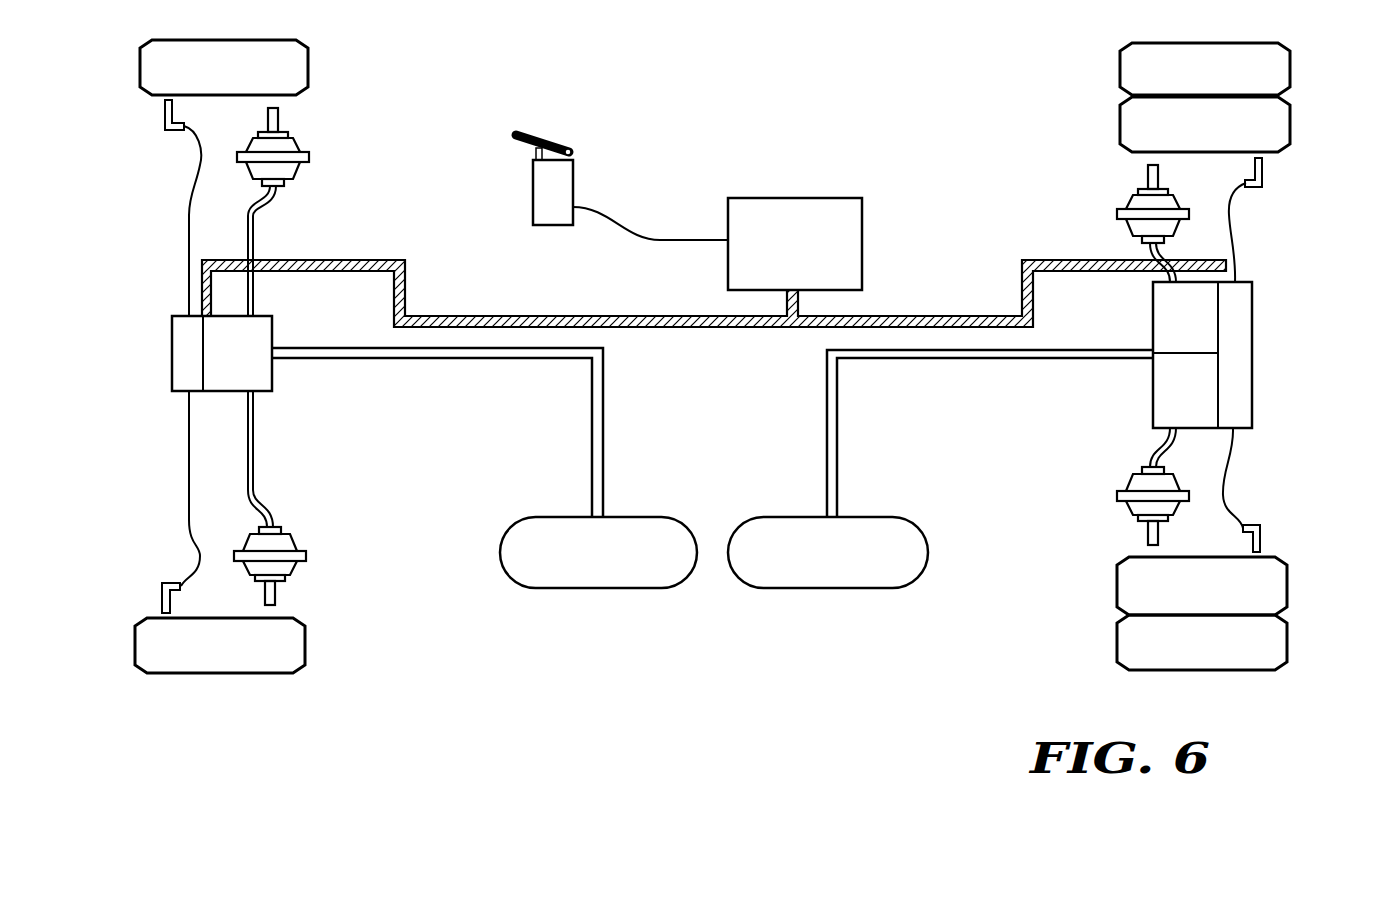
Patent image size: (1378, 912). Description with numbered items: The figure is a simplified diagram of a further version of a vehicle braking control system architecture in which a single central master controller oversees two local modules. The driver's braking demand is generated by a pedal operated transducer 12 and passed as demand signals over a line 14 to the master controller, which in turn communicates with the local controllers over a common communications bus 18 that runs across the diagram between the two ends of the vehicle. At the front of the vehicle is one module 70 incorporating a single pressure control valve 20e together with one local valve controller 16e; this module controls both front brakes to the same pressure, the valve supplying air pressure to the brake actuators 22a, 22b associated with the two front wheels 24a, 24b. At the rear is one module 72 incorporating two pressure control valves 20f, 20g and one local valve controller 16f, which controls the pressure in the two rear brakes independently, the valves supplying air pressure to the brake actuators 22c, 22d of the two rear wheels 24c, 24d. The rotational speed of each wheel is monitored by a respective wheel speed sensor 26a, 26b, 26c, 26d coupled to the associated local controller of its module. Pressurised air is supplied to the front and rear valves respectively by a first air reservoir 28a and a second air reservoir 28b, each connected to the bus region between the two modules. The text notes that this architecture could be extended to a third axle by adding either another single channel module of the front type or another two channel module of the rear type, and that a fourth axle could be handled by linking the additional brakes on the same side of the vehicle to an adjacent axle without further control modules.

The pedal operated transducer 12 is at (540, 188).
The line 14 is at (661, 241).
The local valve controller 16e is at (187, 337).
The local valve controller 16f is at (1243, 393).
The common communications bus 18 is at (752, 330).
The pressure control valve 20e is at (273, 333).
The pressure control valve 20f is at (1165, 319).
The pressure control valve 20g is at (1165, 398).
The brake actuator 22a is at (291, 147).
The brake actuator 22b is at (289, 547).
The brake actuator 22c is at (1139, 198).
The brake actuator 22d is at (1129, 508).
The front wheel 24a is at (302, 69).
The front wheel 24b is at (298, 648).
The rear wheel 24c is at (1292, 97).
The rear wheel 24d is at (1289, 614).
The wheel speed sensor 26a is at (160, 103).
The wheel speed sensor 26b is at (162, 600).
The wheel speed sensor 26c is at (1263, 170).
The wheel speed sensor 26d is at (1262, 540).
The first air reservoir 28a is at (611, 582).
The second air reservoir 28b is at (837, 582).
The module 70 is at (172, 375).
The module 72 is at (1253, 338).